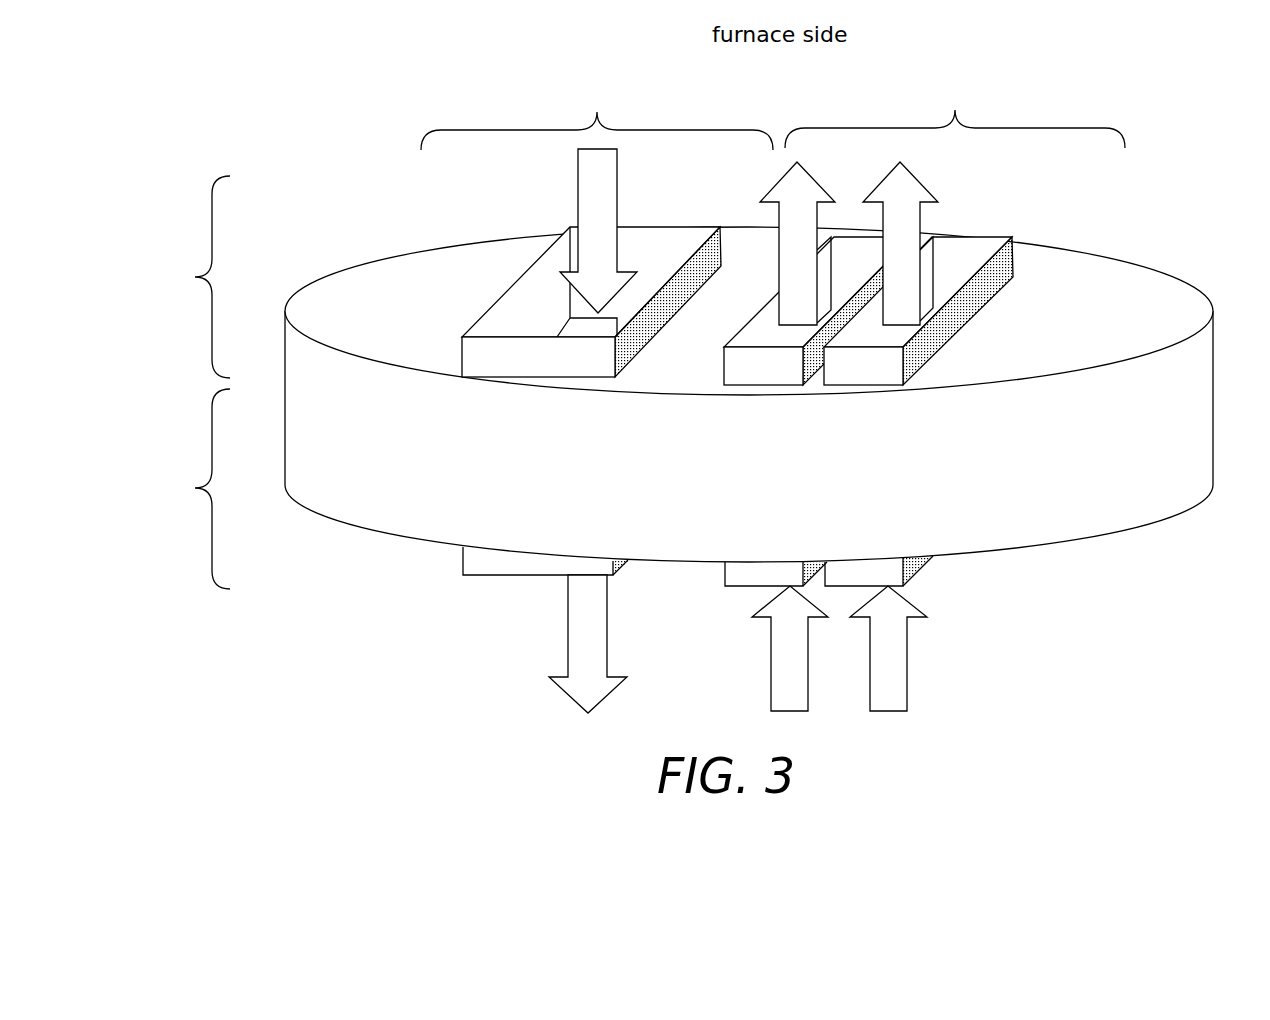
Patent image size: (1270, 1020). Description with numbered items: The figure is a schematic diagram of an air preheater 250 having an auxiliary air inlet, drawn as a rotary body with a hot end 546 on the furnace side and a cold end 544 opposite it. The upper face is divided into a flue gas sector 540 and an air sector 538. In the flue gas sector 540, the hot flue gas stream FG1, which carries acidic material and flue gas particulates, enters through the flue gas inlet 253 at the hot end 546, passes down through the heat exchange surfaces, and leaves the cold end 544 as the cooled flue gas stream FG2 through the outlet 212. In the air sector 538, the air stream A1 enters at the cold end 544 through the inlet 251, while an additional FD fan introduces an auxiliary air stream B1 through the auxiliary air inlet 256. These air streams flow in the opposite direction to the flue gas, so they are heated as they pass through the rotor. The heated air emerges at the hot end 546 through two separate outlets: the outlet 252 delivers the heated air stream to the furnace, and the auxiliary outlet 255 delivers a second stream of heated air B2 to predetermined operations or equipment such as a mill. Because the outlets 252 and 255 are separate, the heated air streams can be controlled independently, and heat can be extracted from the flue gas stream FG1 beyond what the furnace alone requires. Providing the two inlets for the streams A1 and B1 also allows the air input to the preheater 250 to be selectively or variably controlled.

The air preheater 250 is at (1200, 260).
The inlet 251 is at (733, 587).
The outlet 252 is at (770, 301).
The flue gas inlet 253 is at (507, 291).
The auxiliary outlet 255 is at (997, 237).
The auxiliary air inlet 256 is at (910, 582).
The flue gas outlet duct 212 is at (473, 578).
The air sector 538 is at (955, 106).
The flue gas sector 540 is at (597, 107).
The cold end 544 is at (186, 489).
The hot end 546 is at (189, 277).
The flue gas stream FG1 is at (617, 190).
The flue gas outlet flow FG2 is at (568, 633).
The air stream A1 is at (771, 665).
The auxiliary air stream B1 is at (908, 665).
The second stream of heated air B2 is at (922, 222).